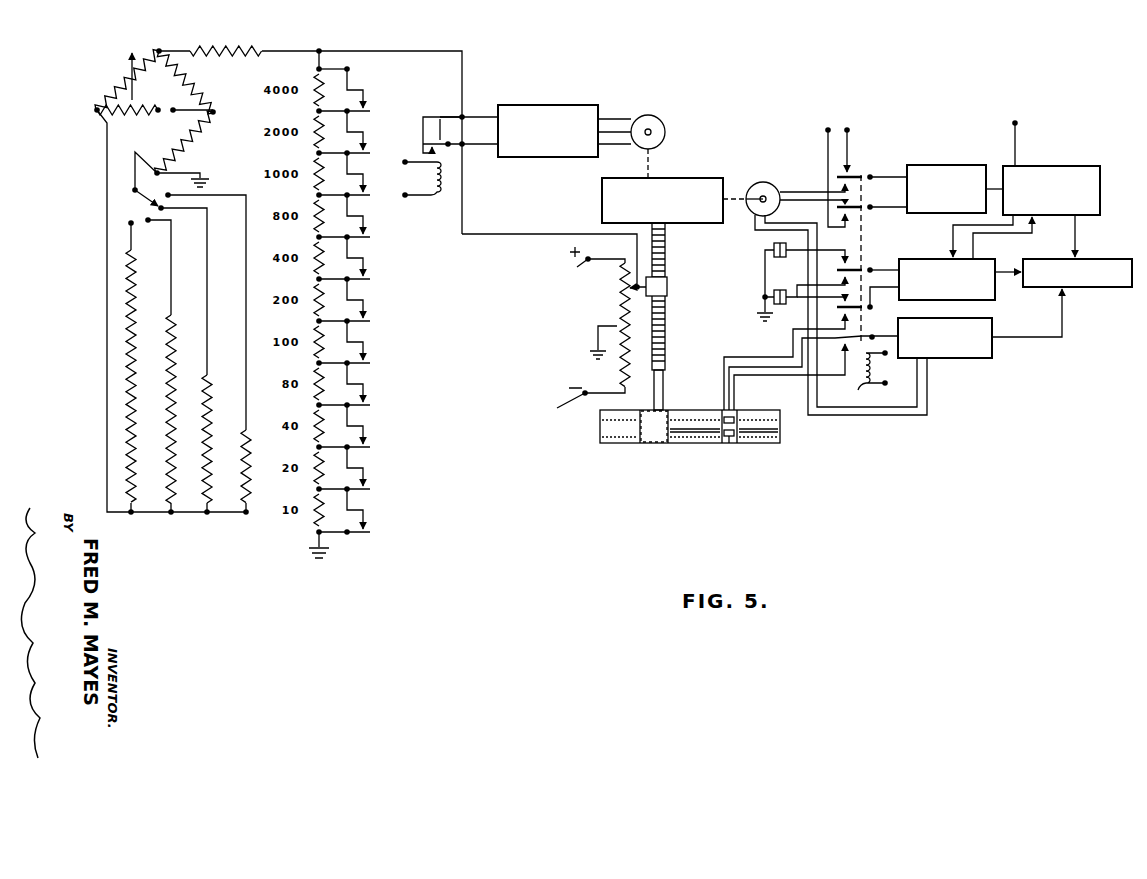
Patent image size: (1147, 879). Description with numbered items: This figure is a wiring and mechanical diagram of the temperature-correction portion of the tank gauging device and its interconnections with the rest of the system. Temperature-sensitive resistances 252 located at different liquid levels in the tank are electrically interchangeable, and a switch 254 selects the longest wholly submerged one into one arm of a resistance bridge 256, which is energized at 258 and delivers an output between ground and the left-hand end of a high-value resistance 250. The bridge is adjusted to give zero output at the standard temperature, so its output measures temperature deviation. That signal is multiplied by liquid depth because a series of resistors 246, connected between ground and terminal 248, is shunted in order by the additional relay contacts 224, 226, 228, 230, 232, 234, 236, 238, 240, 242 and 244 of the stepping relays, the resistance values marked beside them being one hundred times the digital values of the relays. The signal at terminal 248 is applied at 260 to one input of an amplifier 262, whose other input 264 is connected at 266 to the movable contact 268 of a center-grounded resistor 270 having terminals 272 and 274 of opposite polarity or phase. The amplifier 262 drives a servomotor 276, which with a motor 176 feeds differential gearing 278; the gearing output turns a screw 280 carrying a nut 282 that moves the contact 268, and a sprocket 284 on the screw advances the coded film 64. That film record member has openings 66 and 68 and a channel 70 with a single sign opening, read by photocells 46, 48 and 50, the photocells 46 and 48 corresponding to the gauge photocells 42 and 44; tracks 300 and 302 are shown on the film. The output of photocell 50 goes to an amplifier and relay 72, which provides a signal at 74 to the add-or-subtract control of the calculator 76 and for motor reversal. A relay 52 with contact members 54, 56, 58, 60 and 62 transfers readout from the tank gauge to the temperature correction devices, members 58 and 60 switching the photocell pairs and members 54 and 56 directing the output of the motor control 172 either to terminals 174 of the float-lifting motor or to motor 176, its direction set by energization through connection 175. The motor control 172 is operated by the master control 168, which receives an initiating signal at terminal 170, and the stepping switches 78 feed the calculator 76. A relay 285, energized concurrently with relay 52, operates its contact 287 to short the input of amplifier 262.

The resistance 250 is at (220, 43).
The terminal 248 is at (321, 51).
The bridge energization point 258 is at (175, 99).
The resistance bridge 256 is at (95, 137).
The switch 254 is at (128, 204).
The temperature-sensitive resistances 252 is at (244, 488).
The relay contact 224 is at (370, 111).
The relay contact 226 is at (370, 153).
The relay contact 228 is at (370, 195).
The relay contact 230 is at (370, 237).
The relay contact 232 is at (370, 279).
The relay contact 234 is at (370, 321).
The relay contact 236 is at (370, 363).
The relay contact 238 is at (370, 405).
The relay contact 240 is at (370, 447).
The relay contact 242 is at (370, 489).
The relay contact 244 is at (370, 532).
The series of resistors 246 is at (289, 524).
The relay contact 287 is at (440, 117).
The relay 285 is at (428, 195).
The amplifier input terminal 260 is at (482, 117).
The amplifier 262 is at (542, 105).
The amplifier input terminal 264 is at (483, 145).
The connection 266 is at (533, 234).
The servomotor 276 is at (667, 140).
The differential gearing 278 is at (685, 178).
The screw 280 is at (665, 252).
The nut 282 is at (667, 286).
The resistor terminal 272 is at (578, 267).
The movable contact 268 is at (617, 293).
The resistor 270 is at (615, 364).
The resistor terminal 274 is at (557, 408).
The tape track 300 is at (700, 420).
The photocell 46 is at (724, 420).
The tape track 302 is at (747, 424).
The openings 66 is at (599, 420).
The openings 68 is at (599, 428).
The sprocket 284 is at (655, 428).
The photocell 48 is at (725, 433).
The third photocell 50 is at (732, 438).
The film record member 64 is at (758, 444).
The channel 70 is at (818, 432).
The photocell 42 is at (775, 241).
The photocell 44 is at (773, 287).
The contact member 62 is at (802, 339).
The terminals 174 is at (847, 128).
The contact member 54 is at (861, 172).
The contact member 56 is at (864, 205).
The contact member 58 is at (860, 268).
The contact member 60 is at (858, 315).
The stepping switches 78 is at (913, 257).
The motor control 172 is at (933, 165).
The terminal 170 is at (1018, 123).
The master control 168 is at (1053, 166).
The signal connection 74 is at (1062, 303).
The calculator 76 is at (1108, 288).
The amplifier and relay 72 is at (955, 358).
The relay 52 is at (856, 378).
The connection 175 is at (876, 416).
The motor 176 is at (770, 183).